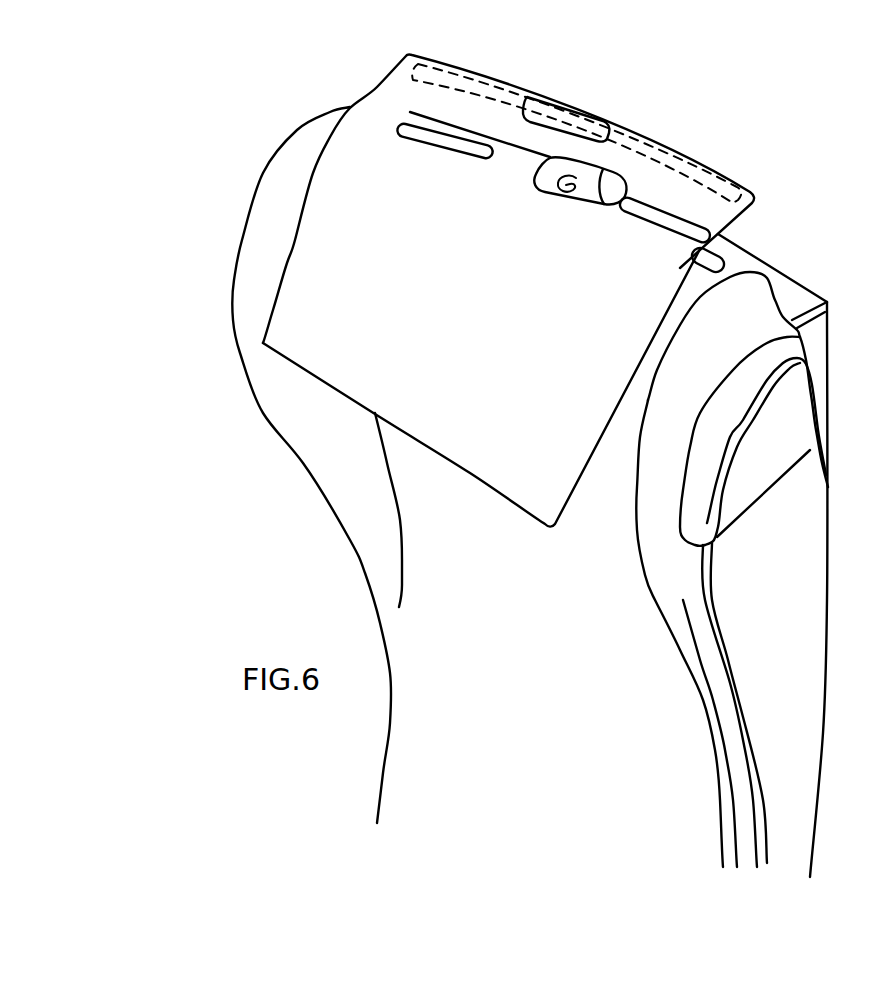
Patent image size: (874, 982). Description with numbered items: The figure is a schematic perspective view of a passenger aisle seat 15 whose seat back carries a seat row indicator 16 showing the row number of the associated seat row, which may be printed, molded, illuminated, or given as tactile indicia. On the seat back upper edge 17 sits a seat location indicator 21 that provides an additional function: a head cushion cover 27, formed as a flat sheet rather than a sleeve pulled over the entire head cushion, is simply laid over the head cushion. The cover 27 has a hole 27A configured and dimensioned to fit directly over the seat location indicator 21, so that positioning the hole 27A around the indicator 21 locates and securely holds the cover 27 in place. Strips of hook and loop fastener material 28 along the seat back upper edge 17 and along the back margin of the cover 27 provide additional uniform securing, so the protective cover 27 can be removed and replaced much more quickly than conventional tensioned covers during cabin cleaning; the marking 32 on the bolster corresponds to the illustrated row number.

The aisle seat 15 is at (150, 158).
The seat row indicator 16 is at (720, 444).
The seat back upper edge 17 is at (730, 263).
The seat location indicator 21 is at (610, 170).
The head cushion cover 27 is at (322, 140).
The hole 27A is at (550, 117).
The strips of hook and loop fastener material 28 is at (410, 127).
The side bolster 32 is at (740, 441).